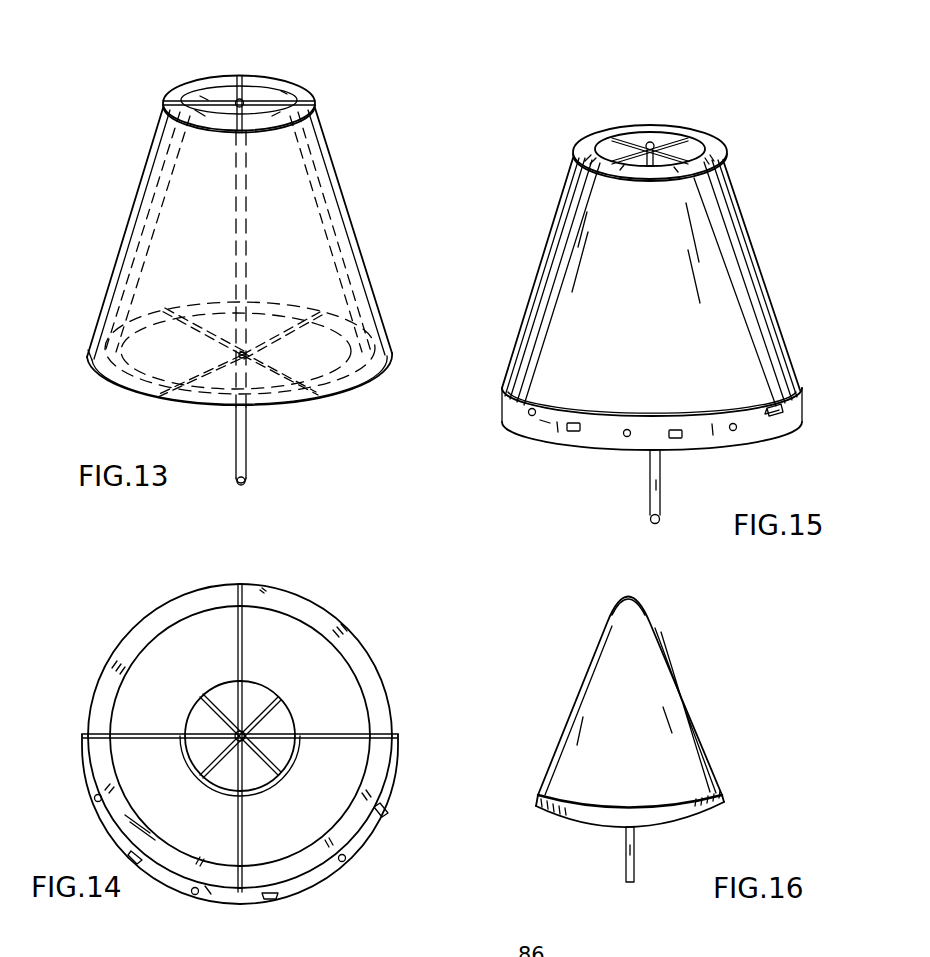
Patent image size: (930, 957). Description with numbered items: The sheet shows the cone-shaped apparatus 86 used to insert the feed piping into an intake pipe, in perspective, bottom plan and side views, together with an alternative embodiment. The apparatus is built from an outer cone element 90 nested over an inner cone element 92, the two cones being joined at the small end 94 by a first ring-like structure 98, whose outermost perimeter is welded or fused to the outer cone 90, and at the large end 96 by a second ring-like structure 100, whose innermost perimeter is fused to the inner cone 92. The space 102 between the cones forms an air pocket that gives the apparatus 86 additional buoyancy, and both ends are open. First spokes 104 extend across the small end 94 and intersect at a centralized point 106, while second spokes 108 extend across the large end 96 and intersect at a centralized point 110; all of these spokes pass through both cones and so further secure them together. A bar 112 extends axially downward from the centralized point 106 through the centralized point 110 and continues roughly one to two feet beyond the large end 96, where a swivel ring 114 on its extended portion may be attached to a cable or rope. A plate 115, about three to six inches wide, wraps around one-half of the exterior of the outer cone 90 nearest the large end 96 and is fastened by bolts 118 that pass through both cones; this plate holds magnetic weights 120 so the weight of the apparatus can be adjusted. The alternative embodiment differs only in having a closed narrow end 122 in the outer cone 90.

In FIG. 13, the cone-shaped apparatus 86 is at (388, 231).
In FIG. 15, the cone-shaped apparatus 86 is at (524, 266).
In FIG. 16, the cone-shaped apparatus 86 is at (700, 686).
In FIG. 13, the outer cone element 90 is at (330, 152).
In FIG. 15, the outer cone element 90 is at (748, 232).
In FIG. 14, the outer cone element 90 is at (162, 602).
In FIG. 13, the inner cone element 92 is at (112, 282).
In FIG. 15, the inner cone element 92 is at (680, 128).
In FIG. 14, the inner cone element 92 is at (213, 602).
In FIG. 13, the small end 94 is at (146, 104).
In FIG. 15, the small end 94 is at (597, 110).
In FIG. 14, the small end 94 is at (302, 706).
In FIG. 13, the large end 96 is at (92, 389).
In FIG. 15, the large end 96 is at (783, 440).
In FIG. 14, the large end 96 is at (78, 700).
In FIG. 13, the first ring-like structure 98 is at (300, 84).
In FIG. 13, the second ring-like structure 100 is at (357, 368).
In FIG. 14, the second ring-like structure 100 is at (135, 640).
In FIG. 13, the space 102 is at (148, 176).
In FIG. 13, the first spokes 104 is at (212, 100).
In FIG. 14, the first spokes 104 is at (264, 704).
In FIG. 13, the centralized point 106 is at (243, 100).
In FIG. 13, the second spokes 108 is at (205, 373).
In FIG. 14, the second spokes 108 is at (245, 623).
In FIG. 13, the centralized point 110 is at (245, 358).
In FIG. 13, the bar 112 is at (244, 284).
In FIG. 15, the bar 112 is at (660, 486).
In FIG. 14, the bar 112 is at (255, 745).
In FIG. 16, the bar 112 is at (630, 854).
In FIG. 13, the swivel ring 114 is at (238, 484).
In FIG. 15, the swivel ring 114 is at (652, 522).
In FIG. 15, the plate 115 is at (545, 428).
In FIG. 14, the plate 115 is at (212, 897).
In FIG. 15, the bolts 118 is at (530, 416).
In FIG. 14, the bolts 118 is at (94, 799).
In FIG. 15, the magnetic weights 120 is at (574, 435).
In FIG. 14, the magnetic weights 120 is at (384, 817).
In FIG. 16, the closed narrow end 122 is at (665, 607).